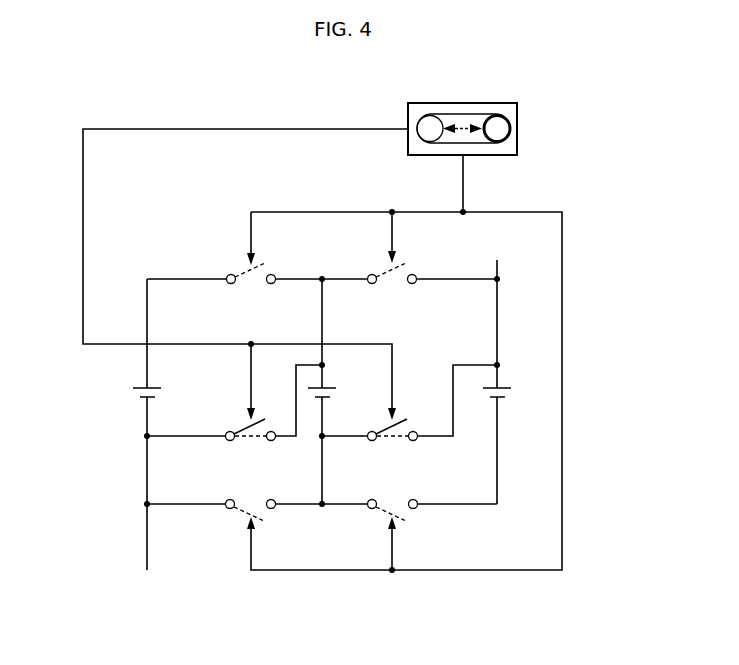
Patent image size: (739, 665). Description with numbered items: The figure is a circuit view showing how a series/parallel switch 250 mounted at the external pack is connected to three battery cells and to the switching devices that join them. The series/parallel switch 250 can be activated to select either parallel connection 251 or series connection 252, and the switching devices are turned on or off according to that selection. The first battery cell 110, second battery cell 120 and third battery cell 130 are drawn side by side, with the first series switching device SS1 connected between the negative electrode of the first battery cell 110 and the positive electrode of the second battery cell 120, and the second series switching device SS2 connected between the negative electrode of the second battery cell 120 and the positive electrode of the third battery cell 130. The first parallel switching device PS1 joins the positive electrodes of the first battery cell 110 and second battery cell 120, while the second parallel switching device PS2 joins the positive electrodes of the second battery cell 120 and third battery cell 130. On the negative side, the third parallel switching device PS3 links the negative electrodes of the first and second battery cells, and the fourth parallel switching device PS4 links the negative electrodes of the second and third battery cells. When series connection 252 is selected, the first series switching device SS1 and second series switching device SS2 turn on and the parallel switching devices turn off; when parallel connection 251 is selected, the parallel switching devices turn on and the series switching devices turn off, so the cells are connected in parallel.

The first battery cell 110 is at (161, 388).
The second battery cell 120 is at (336, 388).
The third battery cell 130 is at (511, 388).
The series/parallel switch 250 is at (501, 100).
The parallel connection 251 is at (496, 115).
The series connection 252 is at (426, 115).
The first parallel switching device PS1 is at (244, 286).
The second parallel switching device PS2 is at (385, 286).
The third parallel switching device PS3 is at (244, 497).
The fourth parallel switching device PS4 is at (385, 498).
The first series switching device SS1 is at (256, 442).
The second series switching device SS2 is at (398, 442).